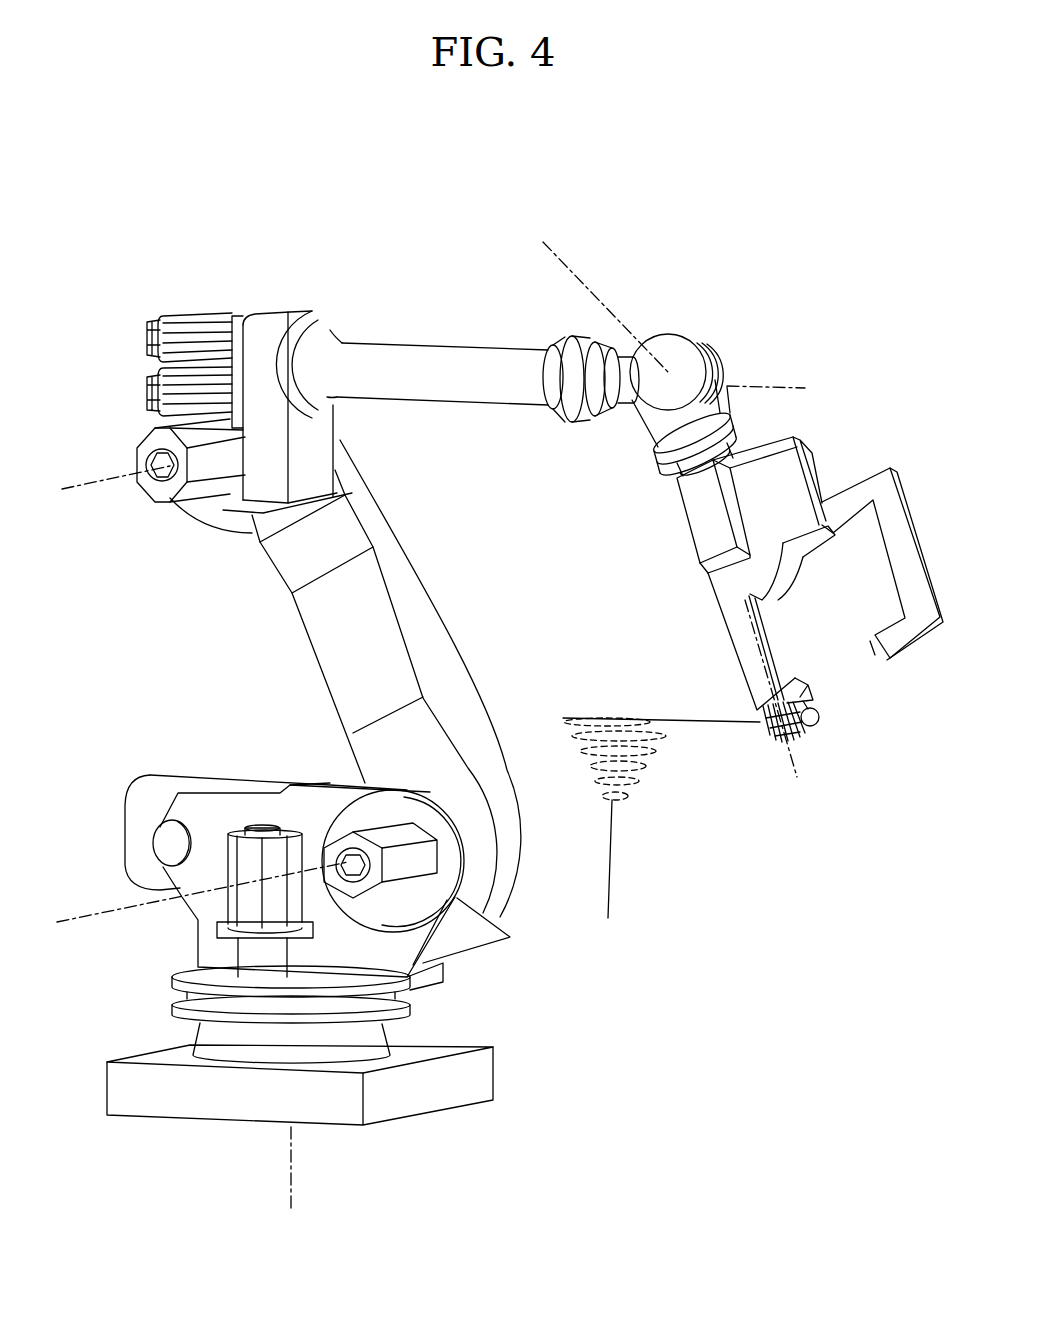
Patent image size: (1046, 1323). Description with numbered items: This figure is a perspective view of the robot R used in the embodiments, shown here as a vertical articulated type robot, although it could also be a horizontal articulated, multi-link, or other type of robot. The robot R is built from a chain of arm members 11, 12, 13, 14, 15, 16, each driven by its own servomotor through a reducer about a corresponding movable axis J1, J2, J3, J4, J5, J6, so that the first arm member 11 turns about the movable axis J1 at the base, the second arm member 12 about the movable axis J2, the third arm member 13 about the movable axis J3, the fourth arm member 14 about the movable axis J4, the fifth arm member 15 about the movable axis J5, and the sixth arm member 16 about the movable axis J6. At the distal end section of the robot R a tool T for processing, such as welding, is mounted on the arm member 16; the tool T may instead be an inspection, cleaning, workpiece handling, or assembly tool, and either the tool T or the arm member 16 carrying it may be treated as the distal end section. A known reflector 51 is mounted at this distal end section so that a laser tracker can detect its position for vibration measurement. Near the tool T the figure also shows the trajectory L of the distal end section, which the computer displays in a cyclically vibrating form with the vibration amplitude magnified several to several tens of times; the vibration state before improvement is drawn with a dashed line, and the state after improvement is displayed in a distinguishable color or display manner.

The robot R is at (176, 281).
The arm member 11 is at (203, 782).
The arm member 12 is at (437, 603).
The arm member 13 is at (310, 314).
The arm member 14 is at (620, 342).
The arm member 15 is at (655, 425).
The arm member 16 is at (677, 453).
The tool T is at (690, 548).
The reflector 51 is at (820, 714).
The trajectory L is at (680, 718).
The movable axis J1 is at (292, 1170).
The movable axis J2 is at (93, 910).
The movable axis J3 is at (103, 478).
The movable axis J4 is at (790, 387).
The movable axis J5 is at (565, 258).
The movable axis J6 is at (800, 760).